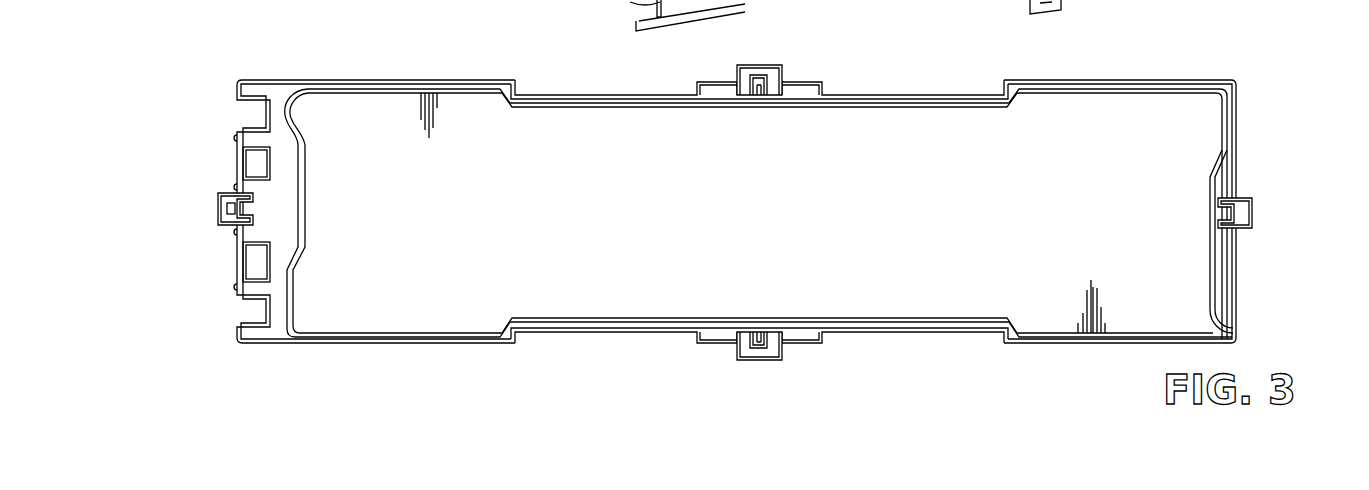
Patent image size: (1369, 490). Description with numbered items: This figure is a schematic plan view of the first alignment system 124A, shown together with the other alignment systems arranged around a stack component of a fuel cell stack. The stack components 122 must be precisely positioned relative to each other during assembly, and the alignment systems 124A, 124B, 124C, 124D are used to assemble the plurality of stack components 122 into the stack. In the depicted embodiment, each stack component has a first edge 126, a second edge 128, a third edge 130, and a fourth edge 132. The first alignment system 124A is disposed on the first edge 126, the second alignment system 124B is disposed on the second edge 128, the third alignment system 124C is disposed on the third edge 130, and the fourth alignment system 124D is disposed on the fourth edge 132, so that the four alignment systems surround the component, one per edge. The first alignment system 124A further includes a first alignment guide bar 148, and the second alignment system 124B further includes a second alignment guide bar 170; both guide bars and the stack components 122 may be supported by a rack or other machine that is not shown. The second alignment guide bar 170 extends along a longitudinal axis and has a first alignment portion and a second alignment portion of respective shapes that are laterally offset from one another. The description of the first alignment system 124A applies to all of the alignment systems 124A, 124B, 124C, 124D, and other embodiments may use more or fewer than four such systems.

The stack components 122 is at (1188, 113).
The first alignment system 124A is at (797, 360).
The second alignment system 124B is at (212, 186).
The third alignment system 124C is at (793, 64).
The fourth alignment system 124D is at (1261, 187).
The first edge 126 is at (537, 342).
The second edge 128 is at (237, 262).
The third edge 130 is at (616, 94).
The fourth edge 132 is at (1240, 268).
The first alignment guide bar 148 is at (752, 361).
The second alignment guide bar 170 is at (218, 212).